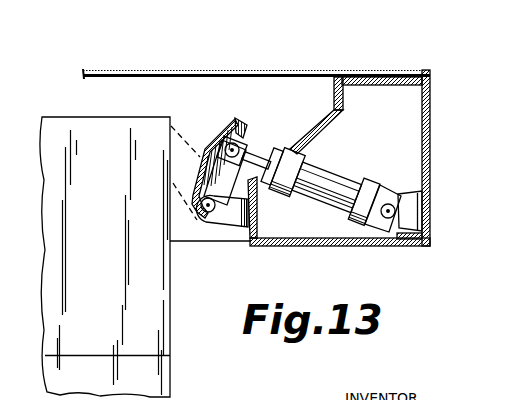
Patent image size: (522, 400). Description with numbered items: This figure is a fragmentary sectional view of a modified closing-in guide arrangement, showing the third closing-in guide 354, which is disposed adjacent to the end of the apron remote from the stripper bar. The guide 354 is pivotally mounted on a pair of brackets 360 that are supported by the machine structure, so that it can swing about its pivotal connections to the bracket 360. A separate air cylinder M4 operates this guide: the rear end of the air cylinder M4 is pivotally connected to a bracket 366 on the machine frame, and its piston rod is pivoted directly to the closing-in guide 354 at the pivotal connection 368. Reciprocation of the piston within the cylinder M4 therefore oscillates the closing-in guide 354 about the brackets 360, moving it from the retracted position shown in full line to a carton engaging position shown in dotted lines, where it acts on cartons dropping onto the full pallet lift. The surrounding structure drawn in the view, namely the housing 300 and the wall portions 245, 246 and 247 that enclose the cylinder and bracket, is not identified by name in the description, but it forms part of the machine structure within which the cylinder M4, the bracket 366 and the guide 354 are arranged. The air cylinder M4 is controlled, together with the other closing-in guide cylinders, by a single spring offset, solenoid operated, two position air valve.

The housing enclosure 300 is at (343, 159).
The top wall of housing 247 is at (356, 77).
The inclined wall of housing 246 is at (327, 110).
The bottom wall of housing 245 is at (290, 245).
The closing-in guide 354 is at (213, 128).
The brackets 360 is at (223, 224).
The pivotal connection 368 is at (249, 137).
The air cylinder M4 is at (333, 173).
The bracket 366 is at (400, 226).